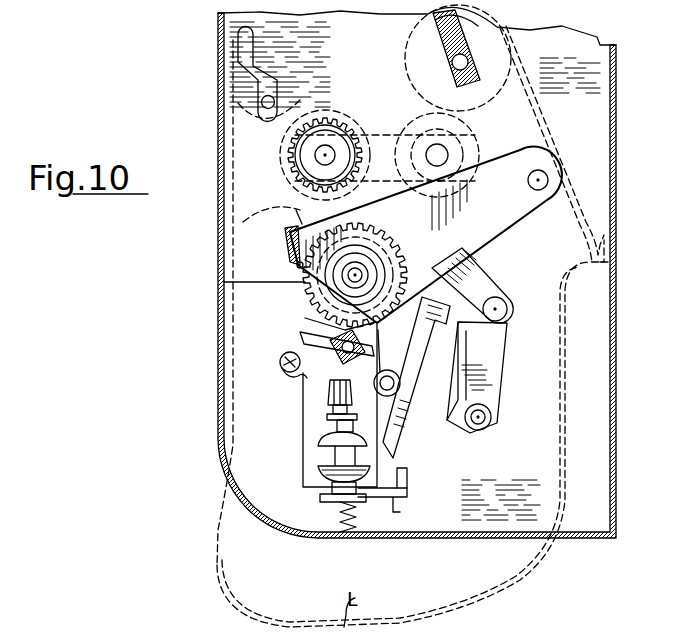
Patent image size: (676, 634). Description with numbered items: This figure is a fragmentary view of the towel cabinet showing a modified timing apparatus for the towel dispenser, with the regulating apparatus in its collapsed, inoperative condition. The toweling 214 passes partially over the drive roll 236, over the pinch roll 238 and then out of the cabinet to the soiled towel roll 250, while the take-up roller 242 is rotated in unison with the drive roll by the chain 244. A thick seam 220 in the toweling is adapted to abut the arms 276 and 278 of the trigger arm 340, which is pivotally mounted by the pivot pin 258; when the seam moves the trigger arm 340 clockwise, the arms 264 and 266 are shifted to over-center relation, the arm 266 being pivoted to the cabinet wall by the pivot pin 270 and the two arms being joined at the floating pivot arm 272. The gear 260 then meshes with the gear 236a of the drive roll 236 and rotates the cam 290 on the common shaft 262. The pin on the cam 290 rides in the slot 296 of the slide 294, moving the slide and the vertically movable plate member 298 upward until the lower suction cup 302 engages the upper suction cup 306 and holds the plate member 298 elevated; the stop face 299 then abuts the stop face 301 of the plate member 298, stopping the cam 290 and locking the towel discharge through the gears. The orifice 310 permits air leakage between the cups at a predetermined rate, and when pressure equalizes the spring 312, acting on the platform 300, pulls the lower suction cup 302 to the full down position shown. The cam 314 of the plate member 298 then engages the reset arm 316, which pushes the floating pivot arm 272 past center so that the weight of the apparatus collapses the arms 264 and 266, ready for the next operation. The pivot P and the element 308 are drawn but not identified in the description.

The toweling 214 is at (217, 545).
The seam 220 is at (240, 615).
The drive roll 236 is at (316, 118).
The gear of the drive roll 236a is at (330, 120).
The pinch roll 238 is at (236, 84).
The take-up roller 242 is at (475, 135).
The chain 244 is at (372, 134).
The soiled towel roll 250 is at (478, 22).
The pivot pin 258 is at (542, 170).
The gear 260 is at (245, 283).
The shaft 262 is at (402, 256).
The arm 264 is at (470, 272).
The arm 266 is at (483, 372).
The pivot pin 270 is at (492, 416).
The floating pivot arm 272 is at (500, 303).
The arm 276 is at (300, 214).
The arm 278 is at (290, 248).
The cam 290 is at (297, 266).
The slide 294 is at (300, 343).
The slot 296 is at (308, 333).
The plate member 298 is at (305, 397).
The stop face 299 is at (455, 338).
The platform 300 is at (399, 505).
The stop face 301 is at (305, 316).
The lower suction cup 302 is at (322, 470).
The upper suction cup 306 is at (325, 437).
The stem 308 is at (335, 456).
The orifice 310 is at (305, 378).
The spring 312 is at (342, 518).
The cam 314 is at (410, 478).
The reset arm 316 is at (412, 432).
The trigger arm 340 is at (520, 211).
The pivot P is at (394, 377).